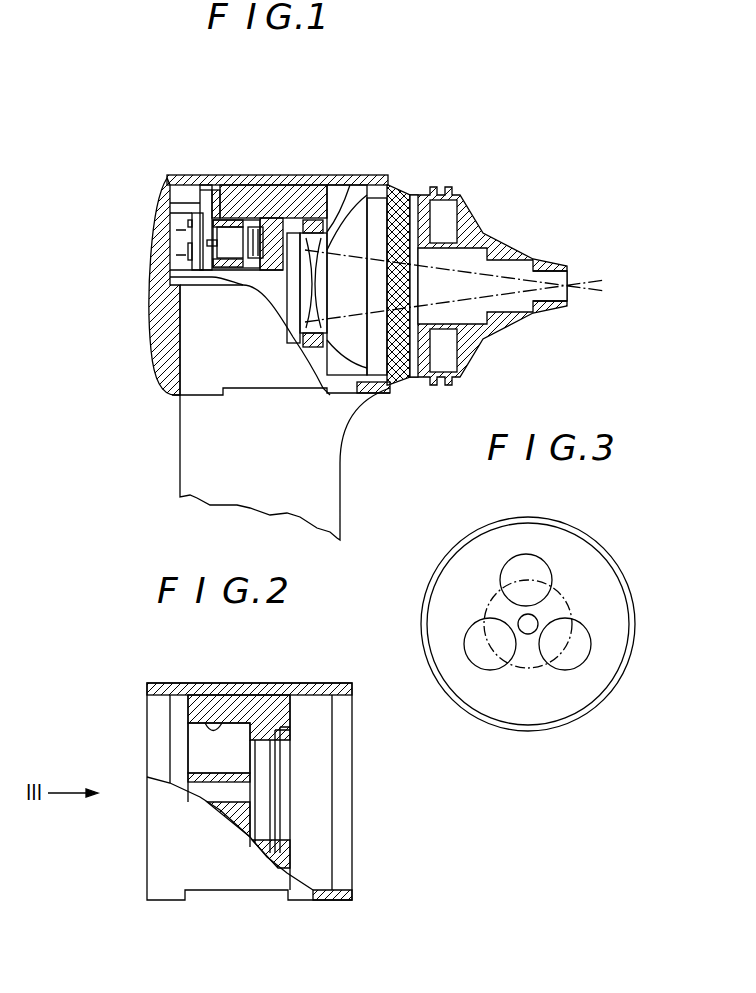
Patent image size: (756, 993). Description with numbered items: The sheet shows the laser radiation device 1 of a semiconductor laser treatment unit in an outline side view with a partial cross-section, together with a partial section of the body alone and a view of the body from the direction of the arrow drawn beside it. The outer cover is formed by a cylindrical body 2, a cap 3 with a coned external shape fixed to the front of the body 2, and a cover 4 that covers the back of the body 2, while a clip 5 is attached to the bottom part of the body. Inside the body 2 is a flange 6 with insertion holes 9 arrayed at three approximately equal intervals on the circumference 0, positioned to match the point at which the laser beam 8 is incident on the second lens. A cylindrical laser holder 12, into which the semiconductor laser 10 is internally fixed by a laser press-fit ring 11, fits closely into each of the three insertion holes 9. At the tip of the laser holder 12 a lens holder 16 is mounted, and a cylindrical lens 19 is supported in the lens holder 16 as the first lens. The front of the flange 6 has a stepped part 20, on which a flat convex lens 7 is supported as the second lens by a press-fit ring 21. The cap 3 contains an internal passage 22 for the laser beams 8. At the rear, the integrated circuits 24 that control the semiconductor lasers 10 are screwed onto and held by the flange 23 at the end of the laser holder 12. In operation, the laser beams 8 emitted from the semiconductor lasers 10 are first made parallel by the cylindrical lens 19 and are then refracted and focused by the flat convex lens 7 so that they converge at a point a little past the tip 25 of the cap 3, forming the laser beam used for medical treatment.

In FIG. 3, the circumference 0 is at (570, 610).
In FIG. 1, the laser radiation device 1 is at (163, 492).
In FIG. 1, the body 2 is at (313, 177).
In FIG. 2, the body 2 is at (230, 890).
In FIG. 3, the body 2 is at (512, 731).
In FIG. 1, the cap 3 is at (460, 195).
In FIG. 1, the cover 4 is at (168, 181).
In FIG. 1, the clip 5 is at (329, 477).
In FIG. 1, the flange 6 is at (300, 205).
In FIG. 2, the flange 6 is at (270, 705).
In FIG. 3, the flange 6 is at (585, 578).
In FIG. 1, the flat convex lens 7 is at (413, 195).
In FIG. 1, the laser beam 8 is at (478, 262).
In FIG. 1, the insertion holes 9 is at (235, 220).
In FIG. 2, the insertion holes 9 is at (227, 727).
In FIG. 3, the insertion holes 9 is at (527, 565).
In FIG. 1, the semiconductor laser 10 is at (243, 227).
In FIG. 1, the laser press-fit ring 11 is at (231, 220).
In FIG. 1, the laser holder 12 is at (264, 228).
In FIG. 1, the lens holder 16 is at (333, 210).
In FIG. 1, the cylindrical lens 19 is at (400, 190).
In FIG. 1, the stepped part 20 is at (388, 393).
In FIG. 2, the stepped part 20 is at (290, 845).
In FIG. 1, the press-fit ring 21 is at (328, 392).
In FIG. 1, the internal passage 22 is at (477, 314).
In FIG. 1, the flange 23 is at (200, 207).
In FIG. 1, the integrated circuits 24 is at (198, 268).
In FIG. 1, the tip 25 is at (569, 265).